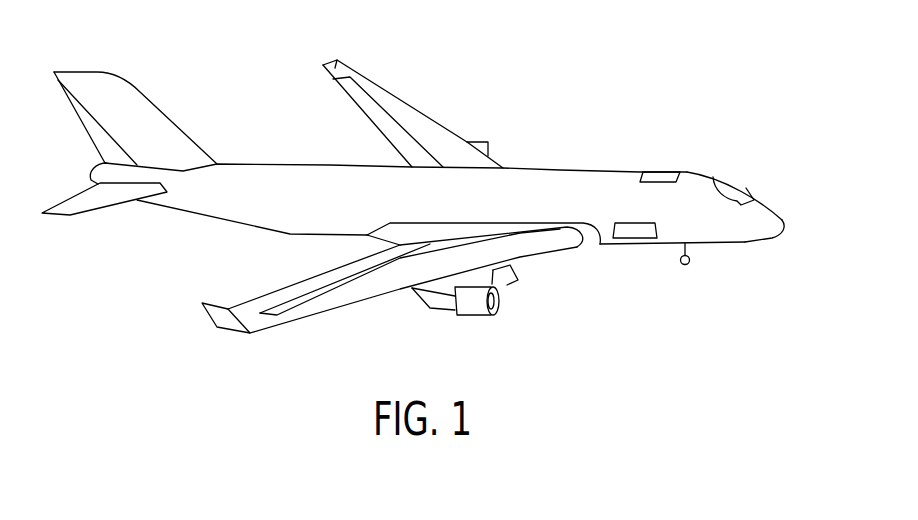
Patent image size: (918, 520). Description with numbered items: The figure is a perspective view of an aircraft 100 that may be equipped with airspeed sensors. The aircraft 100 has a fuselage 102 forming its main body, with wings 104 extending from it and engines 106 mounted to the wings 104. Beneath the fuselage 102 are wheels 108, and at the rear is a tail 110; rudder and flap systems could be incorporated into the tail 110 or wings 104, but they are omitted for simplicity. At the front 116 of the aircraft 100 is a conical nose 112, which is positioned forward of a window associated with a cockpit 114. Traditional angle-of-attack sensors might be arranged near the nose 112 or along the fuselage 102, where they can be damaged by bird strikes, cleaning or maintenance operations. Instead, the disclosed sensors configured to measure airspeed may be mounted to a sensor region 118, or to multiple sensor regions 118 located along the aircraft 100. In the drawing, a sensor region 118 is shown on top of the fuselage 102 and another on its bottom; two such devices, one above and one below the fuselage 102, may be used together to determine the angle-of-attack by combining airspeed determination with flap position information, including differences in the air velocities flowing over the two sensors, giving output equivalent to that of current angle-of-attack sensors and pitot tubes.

The aircraft 100 is at (693, 82).
The fuselage 102 is at (567, 168).
The wings 104 is at (335, 66).
The engines 106 is at (477, 307).
The wheels 108 is at (683, 267).
The tail 110 is at (108, 93).
The conical nose 112 is at (773, 208).
The cockpit 114 is at (717, 178).
The front 116 is at (787, 220).
The sensor region 118 is at (667, 172).